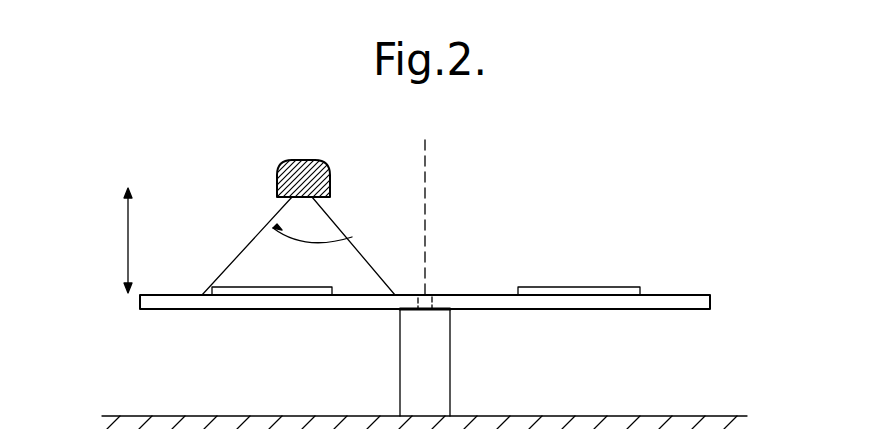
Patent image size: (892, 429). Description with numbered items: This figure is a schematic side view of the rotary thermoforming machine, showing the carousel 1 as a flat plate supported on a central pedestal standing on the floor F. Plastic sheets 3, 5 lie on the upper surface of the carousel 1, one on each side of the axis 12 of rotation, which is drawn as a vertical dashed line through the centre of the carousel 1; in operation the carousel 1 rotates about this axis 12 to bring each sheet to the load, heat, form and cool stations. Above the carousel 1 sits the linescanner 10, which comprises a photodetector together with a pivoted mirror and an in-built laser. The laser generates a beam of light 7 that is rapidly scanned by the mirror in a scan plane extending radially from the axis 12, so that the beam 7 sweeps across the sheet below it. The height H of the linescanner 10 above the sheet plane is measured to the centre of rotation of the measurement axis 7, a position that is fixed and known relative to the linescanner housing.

The carousel 1 is at (687, 295).
The plastic sheet 3 is at (597, 295).
The plastic sheet 5 is at (253, 295).
The beam of light 7 is at (355, 240).
The linescanner 10 is at (306, 160).
The axis of rotation 12 is at (425, 204).
The height of the linescanner H is at (117, 240).
The floor F is at (434, 416).